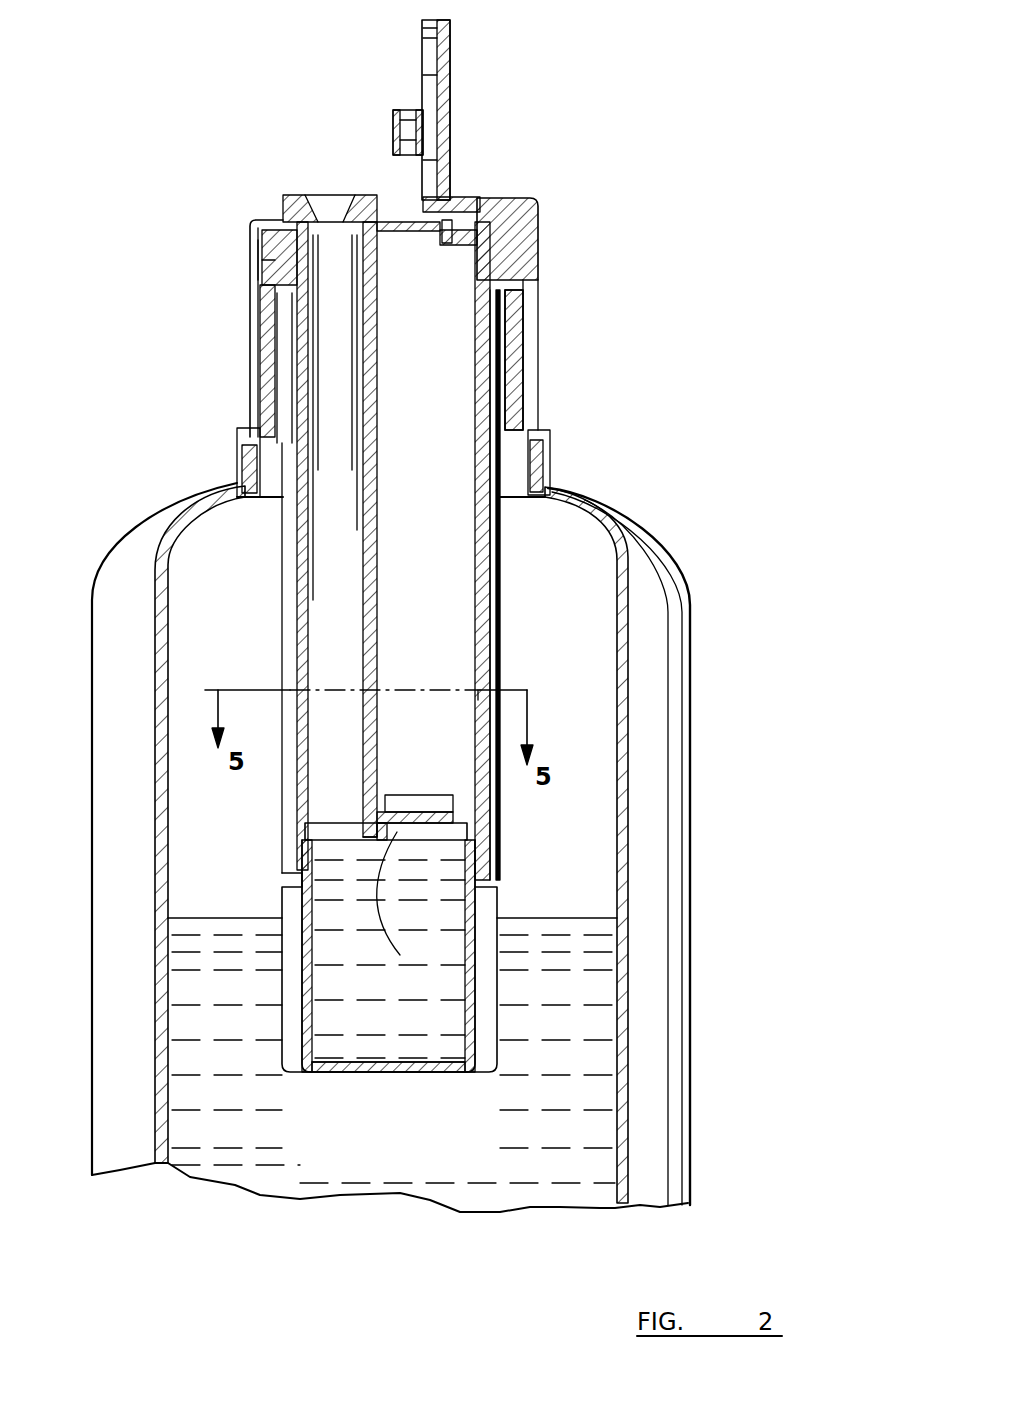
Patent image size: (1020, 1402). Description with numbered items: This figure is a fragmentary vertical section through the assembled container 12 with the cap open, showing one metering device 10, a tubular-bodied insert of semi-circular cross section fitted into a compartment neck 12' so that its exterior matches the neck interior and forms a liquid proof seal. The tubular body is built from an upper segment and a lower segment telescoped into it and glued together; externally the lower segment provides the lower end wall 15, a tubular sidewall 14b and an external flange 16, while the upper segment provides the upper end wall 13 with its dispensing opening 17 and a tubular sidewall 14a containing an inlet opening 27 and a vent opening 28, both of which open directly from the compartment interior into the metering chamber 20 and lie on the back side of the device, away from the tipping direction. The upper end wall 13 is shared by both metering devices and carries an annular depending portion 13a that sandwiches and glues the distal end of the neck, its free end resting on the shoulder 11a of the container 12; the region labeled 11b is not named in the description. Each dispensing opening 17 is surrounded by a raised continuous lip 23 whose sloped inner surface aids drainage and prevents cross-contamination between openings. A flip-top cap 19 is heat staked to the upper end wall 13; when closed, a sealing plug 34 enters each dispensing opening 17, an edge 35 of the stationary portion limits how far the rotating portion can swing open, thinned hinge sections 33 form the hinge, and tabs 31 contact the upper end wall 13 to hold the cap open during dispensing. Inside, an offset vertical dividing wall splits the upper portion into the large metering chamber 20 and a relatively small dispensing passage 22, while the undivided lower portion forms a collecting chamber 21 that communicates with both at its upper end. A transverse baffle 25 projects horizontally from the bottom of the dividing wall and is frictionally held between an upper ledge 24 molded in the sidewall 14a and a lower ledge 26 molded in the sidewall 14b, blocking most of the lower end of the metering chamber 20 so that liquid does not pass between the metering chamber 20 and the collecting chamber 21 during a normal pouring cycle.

The metering device 10 is at (500, 585).
The shoulder 11a is at (262, 283).
The neck flange 11b is at (240, 443).
The container 12 is at (435, 847).
The compartment neck 12' is at (533, 539).
The upper end wall 13 is at (268, 228).
The annular depending portion 13a is at (268, 258).
The tubular sidewall 14a is at (500, 533).
The tubular sidewall 14b is at (490, 905).
The lower end wall 15 is at (365, 1072).
The external flange 16 is at (470, 875).
The dispensing opening 17 is at (350, 215).
The flip-top cap 19 is at (450, 50).
The metering chamber 20 is at (470, 405).
The collecting chamber 21 is at (445, 858).
The dispensing passage 22 is at (330, 352).
The raised continuous lip 23 is at (290, 200).
The upper ledge 24 is at (420, 800).
The transverse baffle 25 is at (375, 835).
The lower ledge 26 is at (404, 894).
The inlet opening 27 is at (495, 315).
The vent opening 28 is at (478, 690).
The tabs 31 is at (375, 160).
The thinned hinge sections 33 is at (445, 205).
The sealing plugs 34 is at (410, 115).
The edge 35 is at (462, 216).